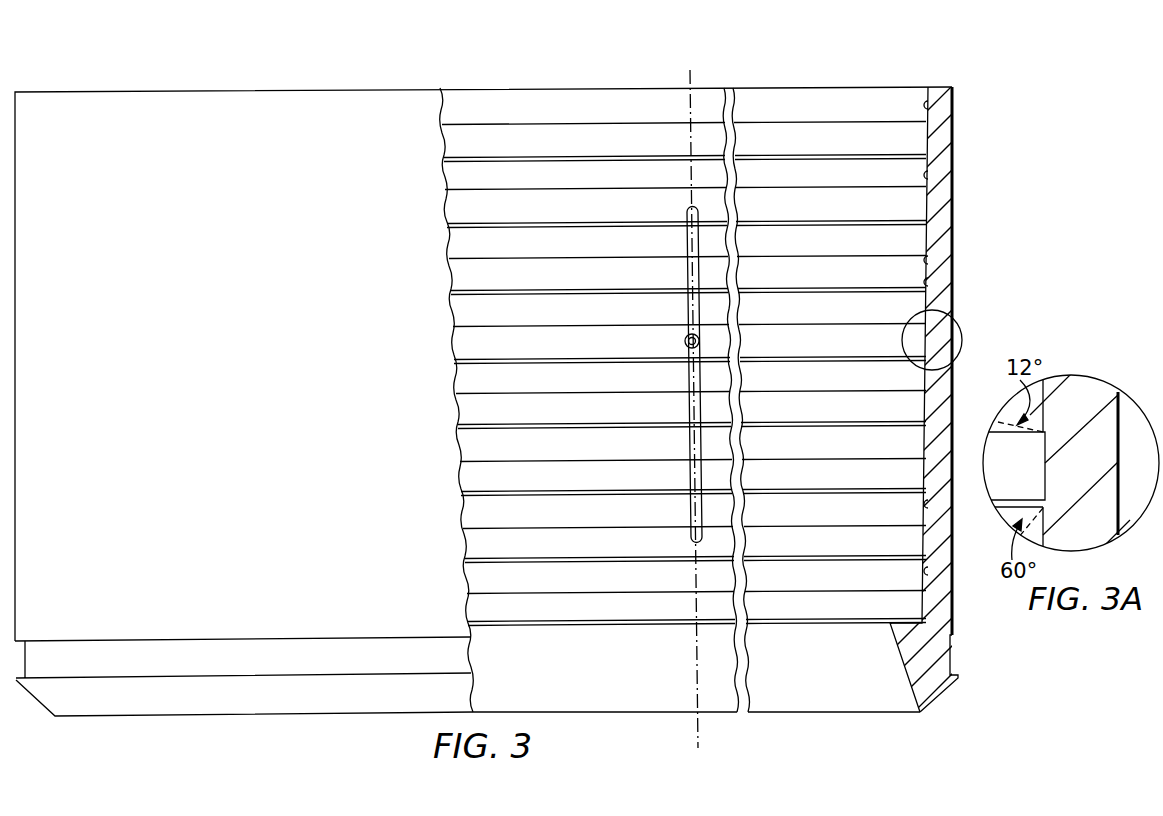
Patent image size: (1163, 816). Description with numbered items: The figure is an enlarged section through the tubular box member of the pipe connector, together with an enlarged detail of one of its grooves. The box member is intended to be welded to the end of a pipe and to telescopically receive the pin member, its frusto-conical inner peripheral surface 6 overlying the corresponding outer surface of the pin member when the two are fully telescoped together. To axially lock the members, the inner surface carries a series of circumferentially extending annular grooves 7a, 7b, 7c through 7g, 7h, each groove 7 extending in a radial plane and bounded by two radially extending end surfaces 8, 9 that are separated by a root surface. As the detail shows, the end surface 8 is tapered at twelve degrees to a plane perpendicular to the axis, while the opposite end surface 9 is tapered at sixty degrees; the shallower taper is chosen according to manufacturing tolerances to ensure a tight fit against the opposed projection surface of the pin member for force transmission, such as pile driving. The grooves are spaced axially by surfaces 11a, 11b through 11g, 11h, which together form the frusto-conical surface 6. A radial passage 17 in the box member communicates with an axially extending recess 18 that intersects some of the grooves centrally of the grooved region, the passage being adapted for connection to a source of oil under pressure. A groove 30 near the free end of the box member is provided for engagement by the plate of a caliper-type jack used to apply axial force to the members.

In FIG. 3, the frusto-conical inner peripheral surface 6 is at (905, 437).
In FIG. 3A, the annular groove 7 is at (1046, 469).
In FIG. 3, the annular groove 7a is at (912, 603).
In FIG. 3, the annular groove 7b is at (914, 533).
In FIG. 3, the annular groove 7c is at (916, 468).
In FIG. 3, the annular groove 7g is at (915, 207).
In FIG. 3, the annular groove 7h is at (927, 142).
In FIG. 3, the groove end surface 8 is at (930, 260).
In FIG. 3A, the groove end surface 8 is at (1016, 432).
In FIG. 3, the groove end surface 9 is at (930, 283).
In FIG. 3A, the groove end surface 9 is at (1040, 498).
In FIG. 3, the spacing surface 11a is at (912, 570).
In FIG. 3, the spacing surface 11b is at (912, 504).
In FIG. 3, the spacing surface 11g is at (930, 175).
In FIG. 3, the spacing surface 11h is at (930, 105).
In FIG. 3, the radial passage 17 is at (687, 345).
In FIG. 3, the axially extending recess 18 is at (699, 413).
In FIG. 3, the frame member 30 is at (957, 652).